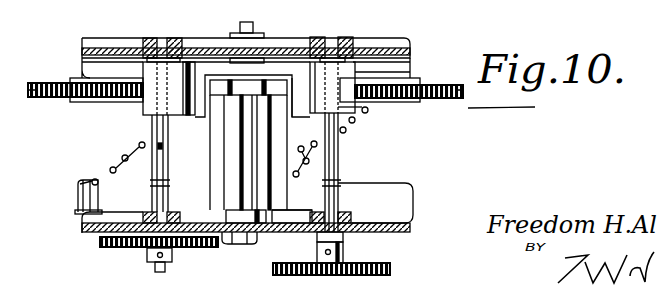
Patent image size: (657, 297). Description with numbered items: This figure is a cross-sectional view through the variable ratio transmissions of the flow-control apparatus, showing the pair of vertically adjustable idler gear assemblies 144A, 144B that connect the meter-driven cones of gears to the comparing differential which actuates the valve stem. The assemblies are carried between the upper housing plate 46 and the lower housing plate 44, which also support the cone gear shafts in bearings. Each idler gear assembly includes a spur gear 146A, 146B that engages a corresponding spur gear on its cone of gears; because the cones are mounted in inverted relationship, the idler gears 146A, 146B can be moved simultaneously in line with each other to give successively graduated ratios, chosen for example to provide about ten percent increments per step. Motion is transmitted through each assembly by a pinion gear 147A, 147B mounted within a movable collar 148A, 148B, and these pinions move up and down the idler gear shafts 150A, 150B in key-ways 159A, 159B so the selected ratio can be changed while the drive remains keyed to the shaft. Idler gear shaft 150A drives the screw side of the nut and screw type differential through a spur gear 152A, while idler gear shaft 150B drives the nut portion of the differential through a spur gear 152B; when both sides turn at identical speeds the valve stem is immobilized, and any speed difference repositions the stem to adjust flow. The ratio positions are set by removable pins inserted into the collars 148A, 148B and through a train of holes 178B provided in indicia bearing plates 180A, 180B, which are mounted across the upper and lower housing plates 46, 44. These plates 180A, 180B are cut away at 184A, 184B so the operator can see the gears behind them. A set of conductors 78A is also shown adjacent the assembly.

The lower housing plate 44 is at (278, 234).
The upper housing plate 46 is at (120, 38).
The conductor wires 78A is at (325, 142).
The idler gear assembly 144A is at (434, 72).
The idler gear assembly 144B is at (52, 75).
The idler spur gear 146A is at (431, 104).
The idler spur gear 146B is at (37, 99).
The pinion gear 147A is at (298, 46).
The pinion gear 147B is at (147, 98).
The movable collar 148A is at (367, 54).
The movable collar 148B is at (200, 58).
The idler gear shaft 150A is at (343, 163).
The idler gear shaft 150B is at (168, 131).
The spur gear 152A is at (389, 274).
The spur gear 152B is at (100, 244).
The key-way 159A is at (343, 179).
The key-way 159B is at (163, 184).
The train of holes 178B is at (110, 171).
The indicia bearing plate 180A is at (310, 202).
The indicia bearing plate 180B is at (141, 203).
The cut-away 184A is at (372, 136).
The cut-away 184B is at (150, 111).